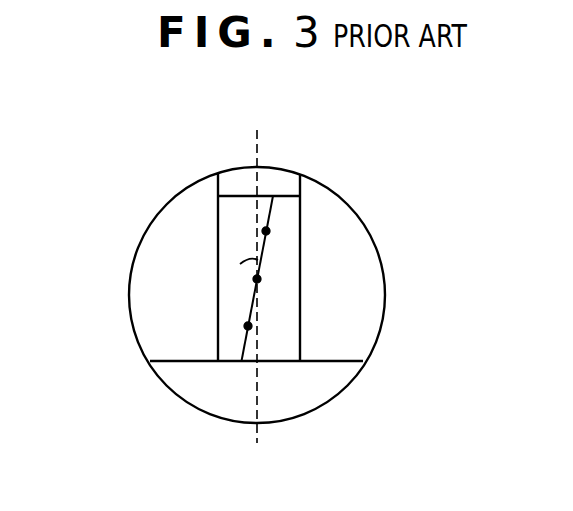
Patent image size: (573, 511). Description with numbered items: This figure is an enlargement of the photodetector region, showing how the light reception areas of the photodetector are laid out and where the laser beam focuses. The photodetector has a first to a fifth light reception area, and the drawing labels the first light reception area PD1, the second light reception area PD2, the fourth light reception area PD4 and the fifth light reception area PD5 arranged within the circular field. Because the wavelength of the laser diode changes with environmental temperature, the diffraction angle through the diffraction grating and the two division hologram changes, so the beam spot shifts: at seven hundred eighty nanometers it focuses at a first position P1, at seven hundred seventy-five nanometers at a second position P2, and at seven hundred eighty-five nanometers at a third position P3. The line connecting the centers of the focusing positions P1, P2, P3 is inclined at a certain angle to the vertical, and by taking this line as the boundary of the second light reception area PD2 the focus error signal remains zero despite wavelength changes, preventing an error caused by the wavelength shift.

The first light reception area PD1 is at (158, 255).
The second light reception area PD2 is at (227, 351).
The fourth light reception area PD4 is at (272, 176).
The fifth light reception area PD5 is at (355, 333).
The first position P1 is at (257, 279).
The second position P2 is at (248, 326).
The third position P3 is at (266, 231).